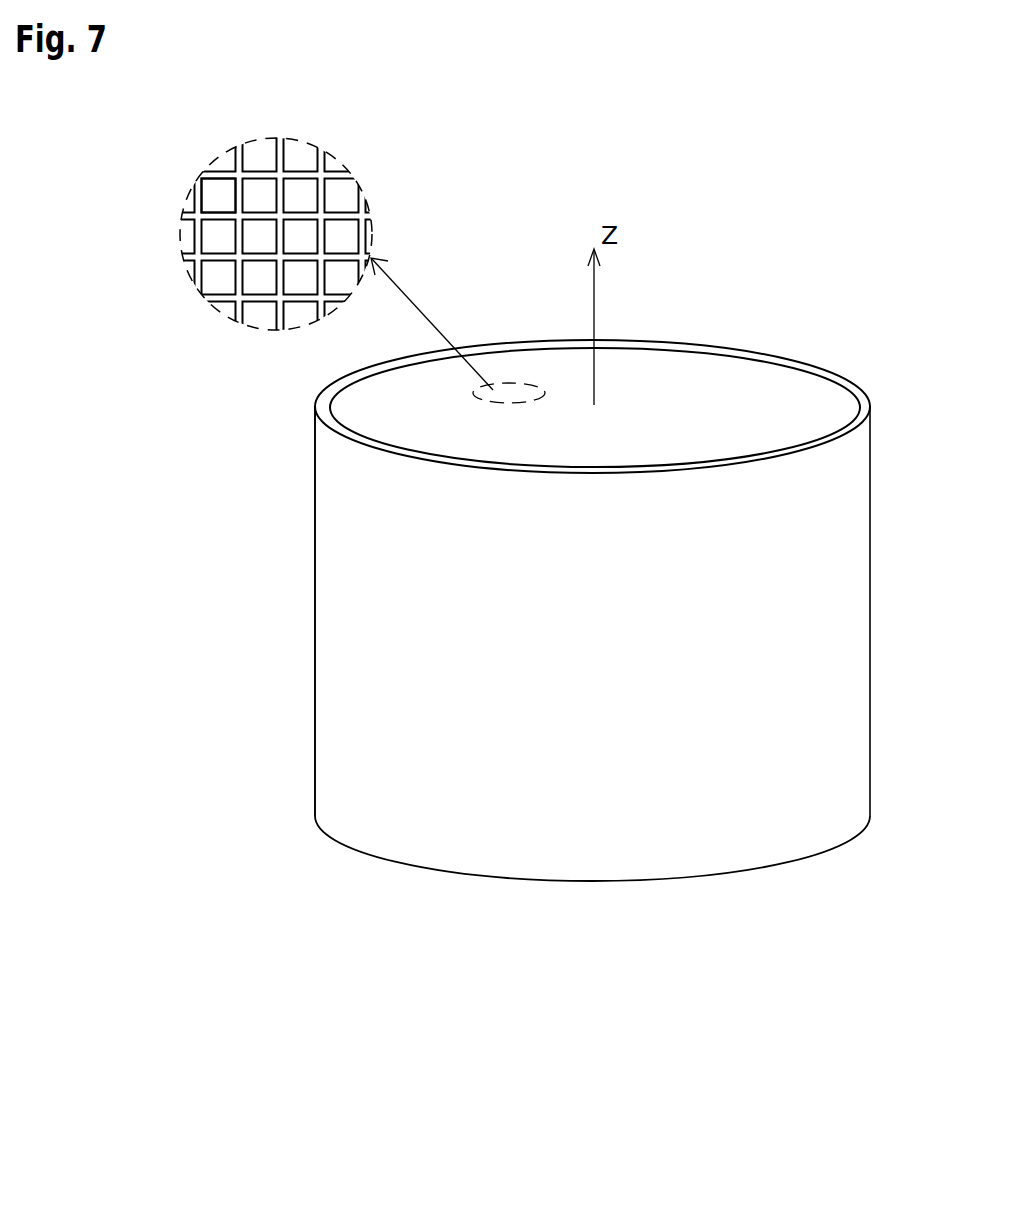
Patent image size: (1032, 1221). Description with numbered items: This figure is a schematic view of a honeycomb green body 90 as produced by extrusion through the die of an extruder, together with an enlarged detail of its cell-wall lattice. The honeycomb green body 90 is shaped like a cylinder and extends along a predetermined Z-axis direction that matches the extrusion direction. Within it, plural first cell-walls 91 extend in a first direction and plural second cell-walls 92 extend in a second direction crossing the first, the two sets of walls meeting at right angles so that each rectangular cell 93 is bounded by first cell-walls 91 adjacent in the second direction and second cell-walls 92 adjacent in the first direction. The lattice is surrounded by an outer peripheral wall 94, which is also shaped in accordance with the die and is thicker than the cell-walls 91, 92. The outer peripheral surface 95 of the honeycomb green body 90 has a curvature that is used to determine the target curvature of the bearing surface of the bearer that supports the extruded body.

The honeycomb green body 90 is at (762, 811).
The first cell-wall 91 is at (216, 296).
The second cell-wall 92 is at (321, 168).
The cell 93 is at (218, 194).
The outer peripheral wall 94 is at (822, 372).
The outer peripheral surface 95 is at (338, 553).